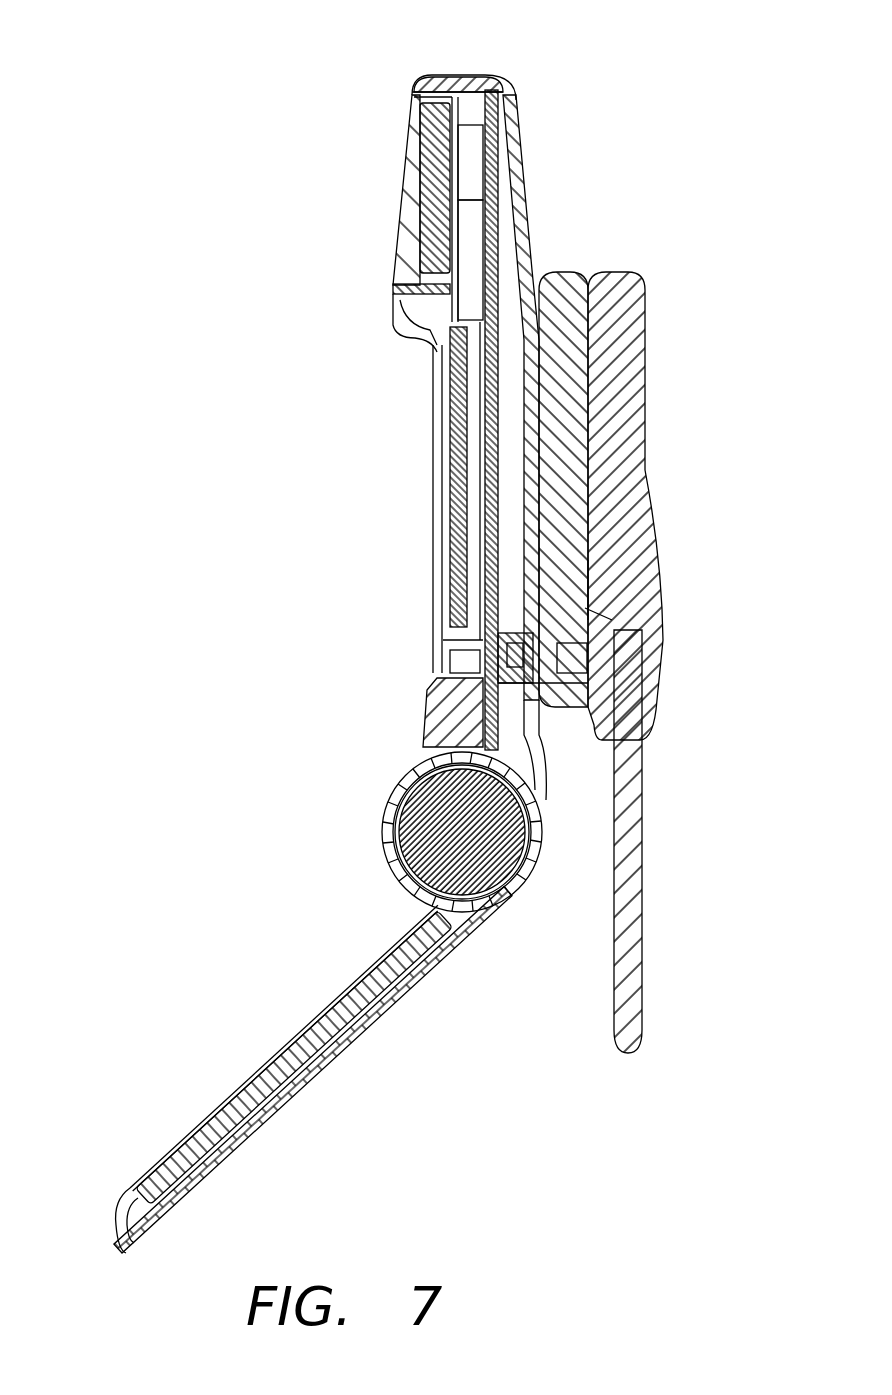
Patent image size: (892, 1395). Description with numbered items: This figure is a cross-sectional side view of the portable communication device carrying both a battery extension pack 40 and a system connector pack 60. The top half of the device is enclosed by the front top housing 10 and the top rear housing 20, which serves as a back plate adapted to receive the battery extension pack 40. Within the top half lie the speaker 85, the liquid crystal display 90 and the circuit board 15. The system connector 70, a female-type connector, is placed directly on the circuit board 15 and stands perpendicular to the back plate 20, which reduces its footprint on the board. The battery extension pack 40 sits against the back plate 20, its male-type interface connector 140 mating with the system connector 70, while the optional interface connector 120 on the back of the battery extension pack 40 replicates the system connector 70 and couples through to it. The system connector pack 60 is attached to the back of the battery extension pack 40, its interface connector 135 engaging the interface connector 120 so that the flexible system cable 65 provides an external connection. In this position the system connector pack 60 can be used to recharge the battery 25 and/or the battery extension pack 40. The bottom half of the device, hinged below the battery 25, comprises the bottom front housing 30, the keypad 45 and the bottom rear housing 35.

The front top housing 10 is at (425, 78).
The speaker 85 is at (410, 148).
The top rear housing 20 is at (540, 243).
The battery extension pack 40 is at (563, 347).
The system connector pack 60 is at (625, 422).
The liquid crystal display 90 is at (447, 440).
The circuit board 15 is at (500, 517).
The system connector 70 is at (598, 592).
The interface connector 140 is at (600, 612).
The interface connector 120 is at (585, 632).
The interface connector 135 is at (580, 662).
The flexible system cable 65 is at (628, 870).
The battery 25 is at (486, 878).
The bottom rear housing 35 is at (342, 1068).
The keypad 45 is at (243, 1087).
The bottom front housing 30 is at (133, 1190).